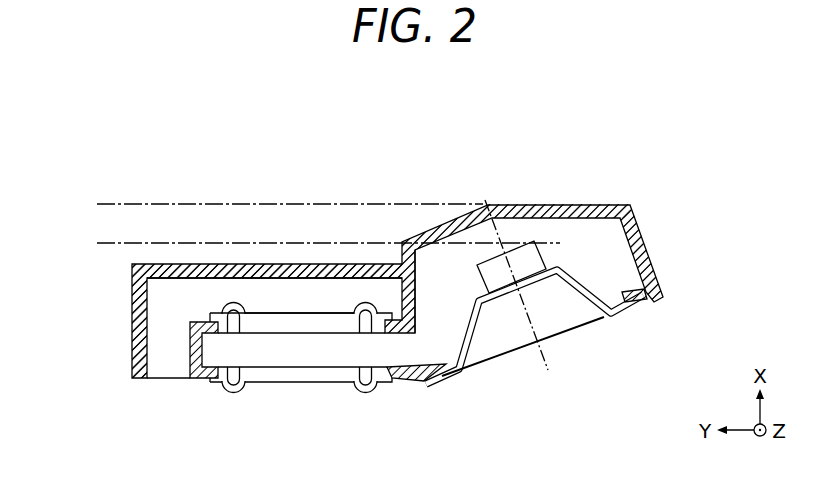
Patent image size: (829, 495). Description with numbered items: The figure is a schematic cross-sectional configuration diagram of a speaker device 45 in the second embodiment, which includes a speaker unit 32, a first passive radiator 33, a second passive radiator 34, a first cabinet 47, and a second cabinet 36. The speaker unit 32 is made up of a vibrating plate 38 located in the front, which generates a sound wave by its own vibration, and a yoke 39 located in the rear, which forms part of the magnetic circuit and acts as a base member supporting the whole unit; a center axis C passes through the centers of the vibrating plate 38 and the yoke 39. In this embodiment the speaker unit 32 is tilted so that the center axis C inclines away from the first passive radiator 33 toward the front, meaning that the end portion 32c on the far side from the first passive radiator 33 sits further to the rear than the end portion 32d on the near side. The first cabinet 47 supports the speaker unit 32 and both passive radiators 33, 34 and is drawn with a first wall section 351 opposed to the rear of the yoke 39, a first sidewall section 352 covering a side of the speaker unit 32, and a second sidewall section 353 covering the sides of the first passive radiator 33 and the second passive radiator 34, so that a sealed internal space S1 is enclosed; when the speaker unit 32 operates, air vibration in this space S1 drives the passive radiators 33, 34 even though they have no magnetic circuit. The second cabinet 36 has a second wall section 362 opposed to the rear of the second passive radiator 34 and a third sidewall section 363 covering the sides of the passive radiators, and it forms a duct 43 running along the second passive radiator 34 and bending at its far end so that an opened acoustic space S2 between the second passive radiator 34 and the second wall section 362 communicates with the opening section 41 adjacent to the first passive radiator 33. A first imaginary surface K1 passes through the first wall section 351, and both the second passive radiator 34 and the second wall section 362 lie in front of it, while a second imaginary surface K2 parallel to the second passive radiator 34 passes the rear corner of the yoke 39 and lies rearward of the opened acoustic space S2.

The speaker device 45 is at (405, 153).
The first cabinet 47 is at (444, 198).
The second cabinet 36 is at (190, 263).
The second wall section 362 is at (252, 268).
The third sidewall section 363 is at (132, 264).
The second passive radiator 34 is at (303, 320).
The duct 43 is at (347, 292).
The yoke 39 is at (528, 262).
The speaker unit 32 is at (558, 264).
The first wall section 351 is at (607, 204).
The first sidewall section 352 is at (647, 255).
The second sidewall section 353 is at (190, 338).
The opening section 41 is at (168, 378).
The first passive radiator 33 is at (302, 375).
The end portion 32d is at (426, 387).
The center axis C is at (548, 368).
The vibrating plate 38 is at (585, 318).
The end portion 32c is at (649, 301).
The first imaginary surface K1 is at (97, 204).
The second imaginary surface K2 is at (97, 243).
The internal space S1 is at (436, 291).
The opened acoustic space S2 is at (274, 294).